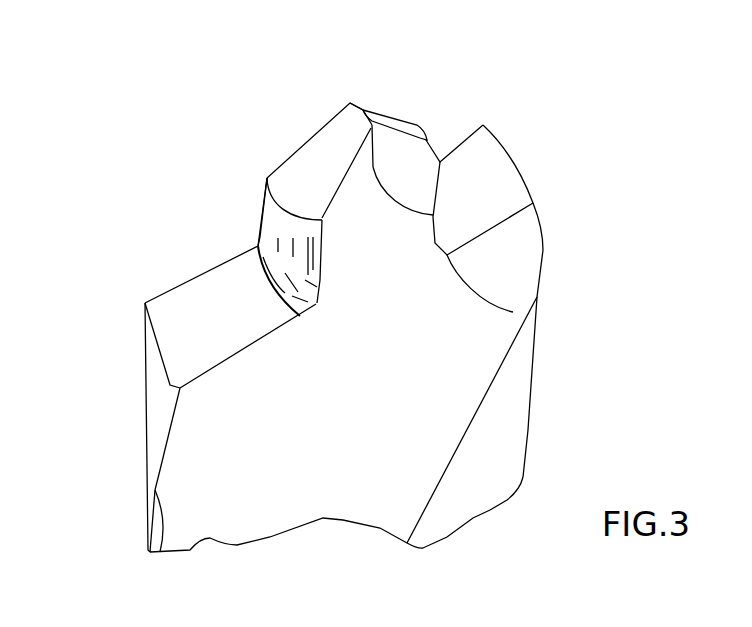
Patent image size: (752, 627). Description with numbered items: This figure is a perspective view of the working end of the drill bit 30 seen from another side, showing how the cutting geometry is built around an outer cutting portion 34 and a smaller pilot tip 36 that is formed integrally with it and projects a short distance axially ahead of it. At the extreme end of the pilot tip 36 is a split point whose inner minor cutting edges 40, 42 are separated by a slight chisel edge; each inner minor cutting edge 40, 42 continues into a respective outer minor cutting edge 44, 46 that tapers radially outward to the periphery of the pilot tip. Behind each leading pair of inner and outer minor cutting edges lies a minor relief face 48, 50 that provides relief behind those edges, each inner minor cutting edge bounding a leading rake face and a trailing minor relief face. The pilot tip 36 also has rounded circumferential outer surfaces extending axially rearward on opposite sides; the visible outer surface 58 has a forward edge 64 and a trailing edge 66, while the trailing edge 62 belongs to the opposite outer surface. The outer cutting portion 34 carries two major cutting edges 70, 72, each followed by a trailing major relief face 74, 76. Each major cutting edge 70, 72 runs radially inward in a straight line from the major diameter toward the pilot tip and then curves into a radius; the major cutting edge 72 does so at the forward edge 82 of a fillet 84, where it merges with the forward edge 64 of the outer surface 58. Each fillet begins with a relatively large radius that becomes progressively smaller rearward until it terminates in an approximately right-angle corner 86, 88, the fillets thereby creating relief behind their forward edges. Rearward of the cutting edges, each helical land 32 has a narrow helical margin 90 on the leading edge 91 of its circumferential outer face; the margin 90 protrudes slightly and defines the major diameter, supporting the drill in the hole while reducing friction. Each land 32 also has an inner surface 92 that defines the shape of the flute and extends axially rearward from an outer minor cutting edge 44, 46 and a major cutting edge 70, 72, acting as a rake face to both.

The cutting insert body 30 is at (373, 487).
The helical land 32 is at (460, 507).
The outer cutting portion 34 is at (163, 202).
The pilot tip 36 is at (298, 153).
The inner minor cutting edge 40 is at (350, 107).
The inner minor cutting edge 42 is at (370, 110).
The outer minor cutting edge 44 is at (392, 117).
The outer minor cutting edge 46 is at (345, 182).
The minor relief face 48 is at (407, 123).
The minor relief face 50 is at (328, 152).
The rounded circumferential outer surface 58 is at (293, 233).
The trailing edge 62 is at (433, 233).
The forward edge 64 is at (320, 260).
The trailing edge 66 is at (262, 207).
The major cutting edge 70 is at (463, 140).
The major cutting edge 72 is at (260, 345).
The major relief face 74 is at (495, 187).
The major relief face 76 is at (207, 327).
The forward edge 82 is at (320, 280).
The fillet 84 is at (270, 289).
The corner 86 is at (518, 311).
The corner 88 is at (258, 248).
The helical margin 90 is at (157, 443).
The leading edge 91 is at (163, 532).
The land inner surface 92 is at (240, 472).